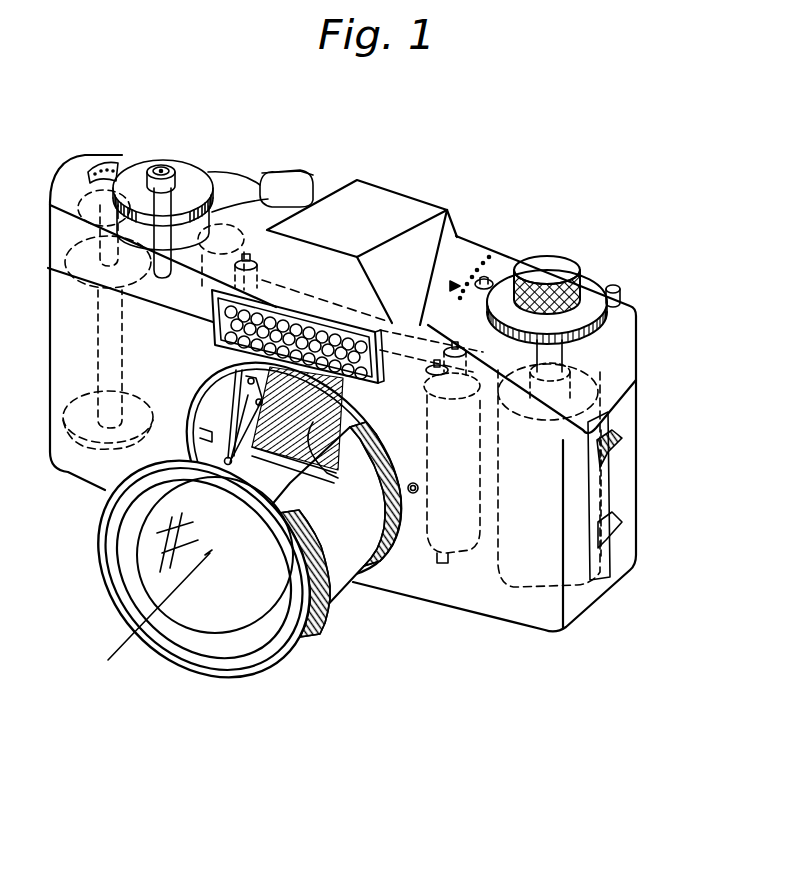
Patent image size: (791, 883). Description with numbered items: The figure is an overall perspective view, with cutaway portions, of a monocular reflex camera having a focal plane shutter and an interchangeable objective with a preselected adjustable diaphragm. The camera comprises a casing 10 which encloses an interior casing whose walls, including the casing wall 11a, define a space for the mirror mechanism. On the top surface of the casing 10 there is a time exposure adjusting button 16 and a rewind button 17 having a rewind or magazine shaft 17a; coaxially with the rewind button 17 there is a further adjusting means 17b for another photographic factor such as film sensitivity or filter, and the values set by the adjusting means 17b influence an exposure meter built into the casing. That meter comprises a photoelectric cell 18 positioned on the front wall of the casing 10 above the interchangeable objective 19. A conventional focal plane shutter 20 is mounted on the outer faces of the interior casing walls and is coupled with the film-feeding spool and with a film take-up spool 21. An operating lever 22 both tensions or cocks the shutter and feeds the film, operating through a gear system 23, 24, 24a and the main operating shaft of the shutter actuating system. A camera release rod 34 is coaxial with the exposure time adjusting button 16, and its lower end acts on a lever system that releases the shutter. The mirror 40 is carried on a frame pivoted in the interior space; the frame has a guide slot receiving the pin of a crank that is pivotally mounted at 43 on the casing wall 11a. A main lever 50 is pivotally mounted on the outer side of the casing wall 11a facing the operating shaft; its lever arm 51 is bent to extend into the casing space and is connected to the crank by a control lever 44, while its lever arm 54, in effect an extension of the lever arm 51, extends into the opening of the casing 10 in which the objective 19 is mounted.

The casing 10 is at (462, 243).
The casing wall 11a is at (245, 372).
The time exposure adjusting button 16 is at (129, 192).
The rewind button 17 is at (546, 266).
The rewind or magazine shaft 17a is at (540, 352).
The adjusting means 17b is at (590, 283).
The photoelectric cell 18 is at (313, 330).
The interchangeable objective 19 is at (217, 605).
The focal plane shutter 20 is at (460, 457).
The film take-up spool 21 is at (108, 352).
The operating lever 22 is at (287, 180).
The gear system 23 is at (173, 272).
The gear system 24 is at (226, 238).
The gear system 24a is at (68, 200).
The camera release rod 34 is at (164, 169).
The mirror 40 is at (313, 422).
The pivot of crank 43 is at (236, 381).
The control lever 44 is at (258, 400).
The main lever 50 is at (250, 424).
The lever arm 51 is at (233, 422).
The lever arm 54 is at (229, 464).